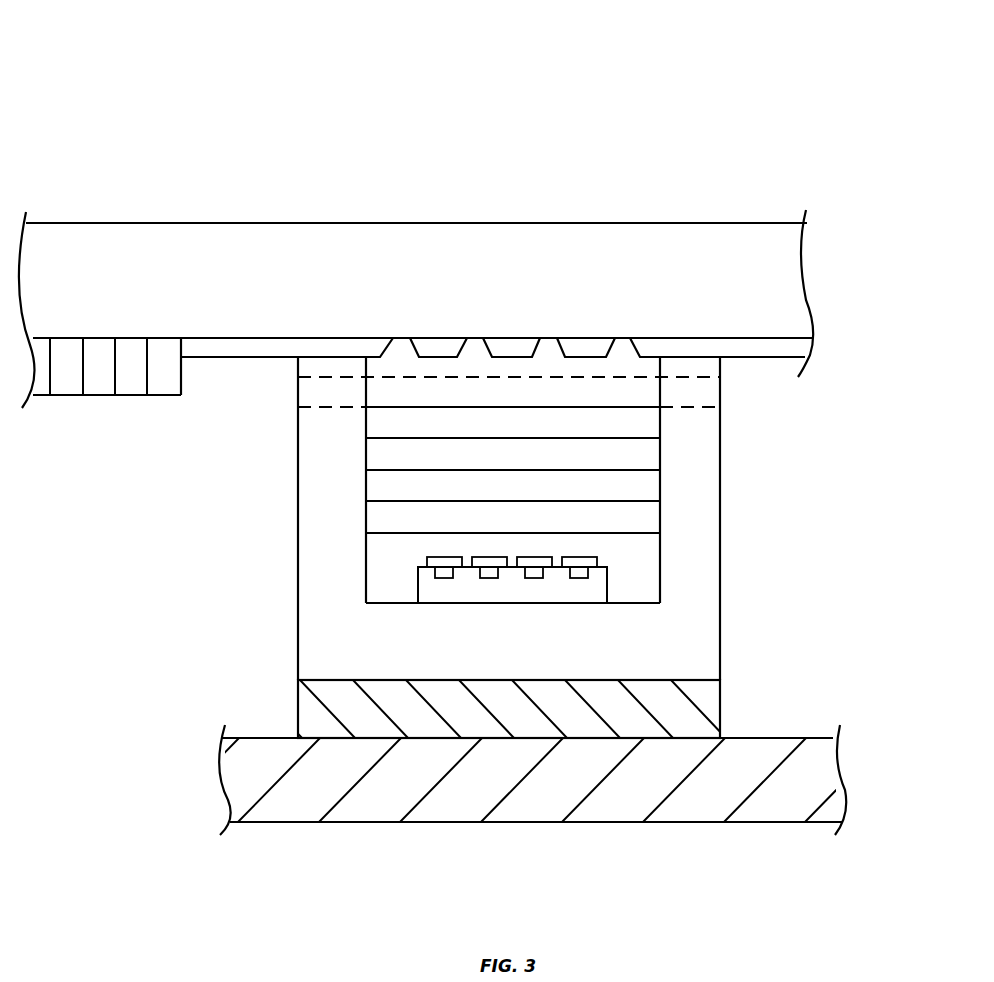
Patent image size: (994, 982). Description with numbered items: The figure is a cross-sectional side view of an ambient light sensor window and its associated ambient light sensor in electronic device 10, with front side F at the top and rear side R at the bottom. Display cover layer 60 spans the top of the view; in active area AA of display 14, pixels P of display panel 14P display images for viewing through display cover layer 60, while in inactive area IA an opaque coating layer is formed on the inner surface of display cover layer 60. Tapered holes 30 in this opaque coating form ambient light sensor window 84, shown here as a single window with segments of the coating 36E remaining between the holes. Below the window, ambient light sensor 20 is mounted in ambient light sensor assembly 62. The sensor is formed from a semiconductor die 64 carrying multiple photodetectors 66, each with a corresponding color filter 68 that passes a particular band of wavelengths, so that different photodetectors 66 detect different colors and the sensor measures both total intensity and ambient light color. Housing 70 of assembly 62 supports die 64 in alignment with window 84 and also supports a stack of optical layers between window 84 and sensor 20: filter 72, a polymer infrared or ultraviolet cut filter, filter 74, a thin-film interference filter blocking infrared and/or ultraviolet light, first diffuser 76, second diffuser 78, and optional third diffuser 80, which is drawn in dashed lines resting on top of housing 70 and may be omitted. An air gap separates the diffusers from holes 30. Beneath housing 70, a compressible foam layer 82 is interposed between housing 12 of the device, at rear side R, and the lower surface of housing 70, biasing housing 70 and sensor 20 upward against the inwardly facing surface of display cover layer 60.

The electronic device 10 is at (872, 175).
The housing 12 is at (306, 805).
The display 14 is at (697, 122).
The display panel 14P is at (125, 410).
The ambient light sensor 20 is at (548, 595).
The holes 30 is at (553, 335).
The electrode 36E is at (265, 347).
The display cover layer 60 is at (787, 278).
The ambient light sensor assembly 62 is at (750, 360).
The semiconductor die 64 is at (602, 582).
The photodetectors 66 is at (445, 578).
The color filters 68 is at (435, 553).
The housing 70 is at (316, 617).
The filter 72 is at (366, 521).
The filter 74 is at (366, 490).
The first diffuser 76 is at (366, 458).
The second diffuser 78 is at (366, 427).
The third diffuser 80 is at (375, 390).
The foam layer 82 is at (708, 703).
The ambient light sensor window 84 is at (392, 305).
The pixels P is at (70, 382).
The front side F is at (540, 85).
The rear side R is at (444, 858).
The active area AA is at (182, 190).
The inactive area IA is at (806, 190).